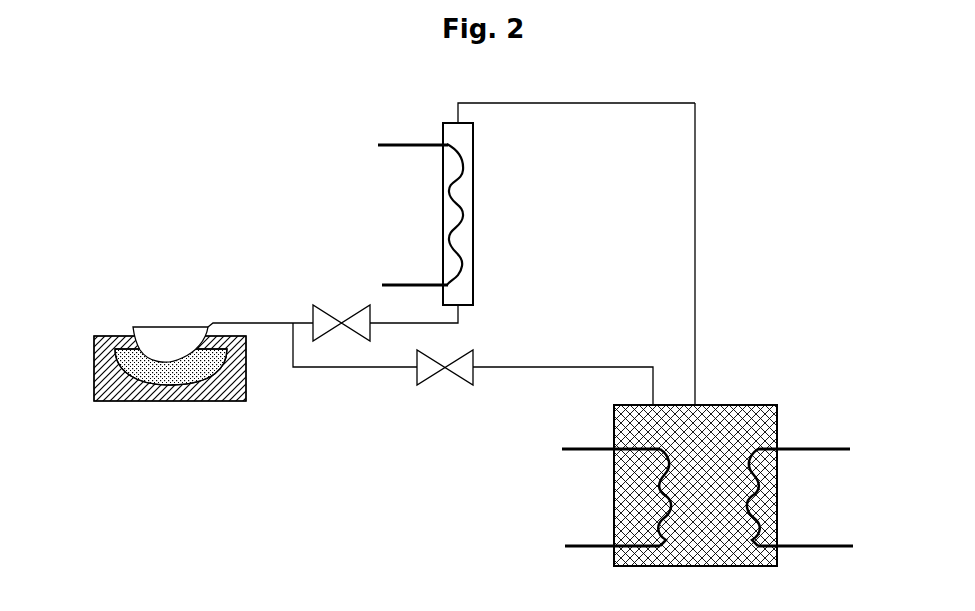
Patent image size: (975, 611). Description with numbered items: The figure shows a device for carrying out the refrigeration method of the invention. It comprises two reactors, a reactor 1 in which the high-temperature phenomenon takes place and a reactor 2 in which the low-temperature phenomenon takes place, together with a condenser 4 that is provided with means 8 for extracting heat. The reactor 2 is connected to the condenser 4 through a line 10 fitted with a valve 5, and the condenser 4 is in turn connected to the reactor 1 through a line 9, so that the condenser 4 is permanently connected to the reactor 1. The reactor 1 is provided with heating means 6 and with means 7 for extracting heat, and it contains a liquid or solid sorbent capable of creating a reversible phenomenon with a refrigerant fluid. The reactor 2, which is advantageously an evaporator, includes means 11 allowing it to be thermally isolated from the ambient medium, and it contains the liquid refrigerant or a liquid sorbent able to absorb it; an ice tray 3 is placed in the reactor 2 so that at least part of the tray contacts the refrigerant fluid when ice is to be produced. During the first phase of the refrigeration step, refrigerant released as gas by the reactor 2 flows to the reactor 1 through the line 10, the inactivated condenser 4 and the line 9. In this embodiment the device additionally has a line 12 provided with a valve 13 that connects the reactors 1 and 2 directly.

The reactor 1 is at (742, 421).
The reactor 2 is at (141, 368).
The ice tray 3 is at (174, 328).
The condenser 4 is at (463, 238).
The valve 5 is at (318, 317).
The heating means 6 is at (822, 448).
The means for extracting the heat 7 is at (588, 539).
The means for extracting the heat 8 is at (312, 281).
The line 9 is at (695, 225).
The line 10 is at (404, 320).
The means for thermal isolation 11 is at (234, 392).
The line 12 is at (577, 365).
The valve 13 is at (475, 357).